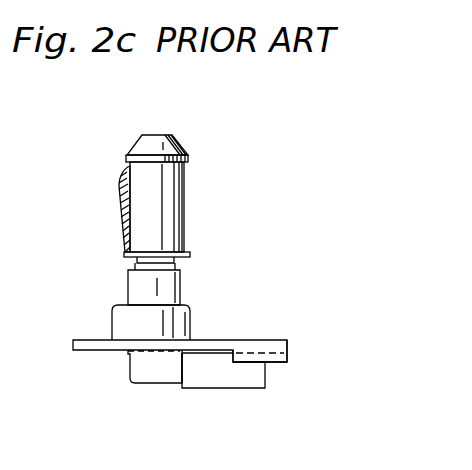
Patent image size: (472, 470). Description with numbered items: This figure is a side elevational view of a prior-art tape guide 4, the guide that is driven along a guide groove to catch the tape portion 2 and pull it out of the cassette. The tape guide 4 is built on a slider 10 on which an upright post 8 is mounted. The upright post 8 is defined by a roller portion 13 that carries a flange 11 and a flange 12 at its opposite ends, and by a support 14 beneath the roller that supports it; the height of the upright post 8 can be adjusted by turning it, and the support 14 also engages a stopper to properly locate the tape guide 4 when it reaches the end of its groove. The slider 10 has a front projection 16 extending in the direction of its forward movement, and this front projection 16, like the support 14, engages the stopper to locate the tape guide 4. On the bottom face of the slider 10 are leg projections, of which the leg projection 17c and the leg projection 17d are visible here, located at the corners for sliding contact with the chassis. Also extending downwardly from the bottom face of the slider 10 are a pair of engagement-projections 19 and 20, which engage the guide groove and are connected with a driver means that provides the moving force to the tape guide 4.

The tape guide 4 is at (116, 143).
The flange 11 is at (178, 138).
The roller portion 13 is at (178, 181).
The upright post 8 is at (197, 210).
The tape portion 2 is at (122, 222).
The flange 12 is at (186, 257).
The support 14 is at (136, 290).
The slider 10 is at (122, 344).
The front projection 16 is at (84, 343).
The engagement-projection 19 is at (148, 377).
The leg projection 17c is at (172, 360).
The engagement-projection 20 is at (235, 378).
The leg projection 17d is at (280, 364).